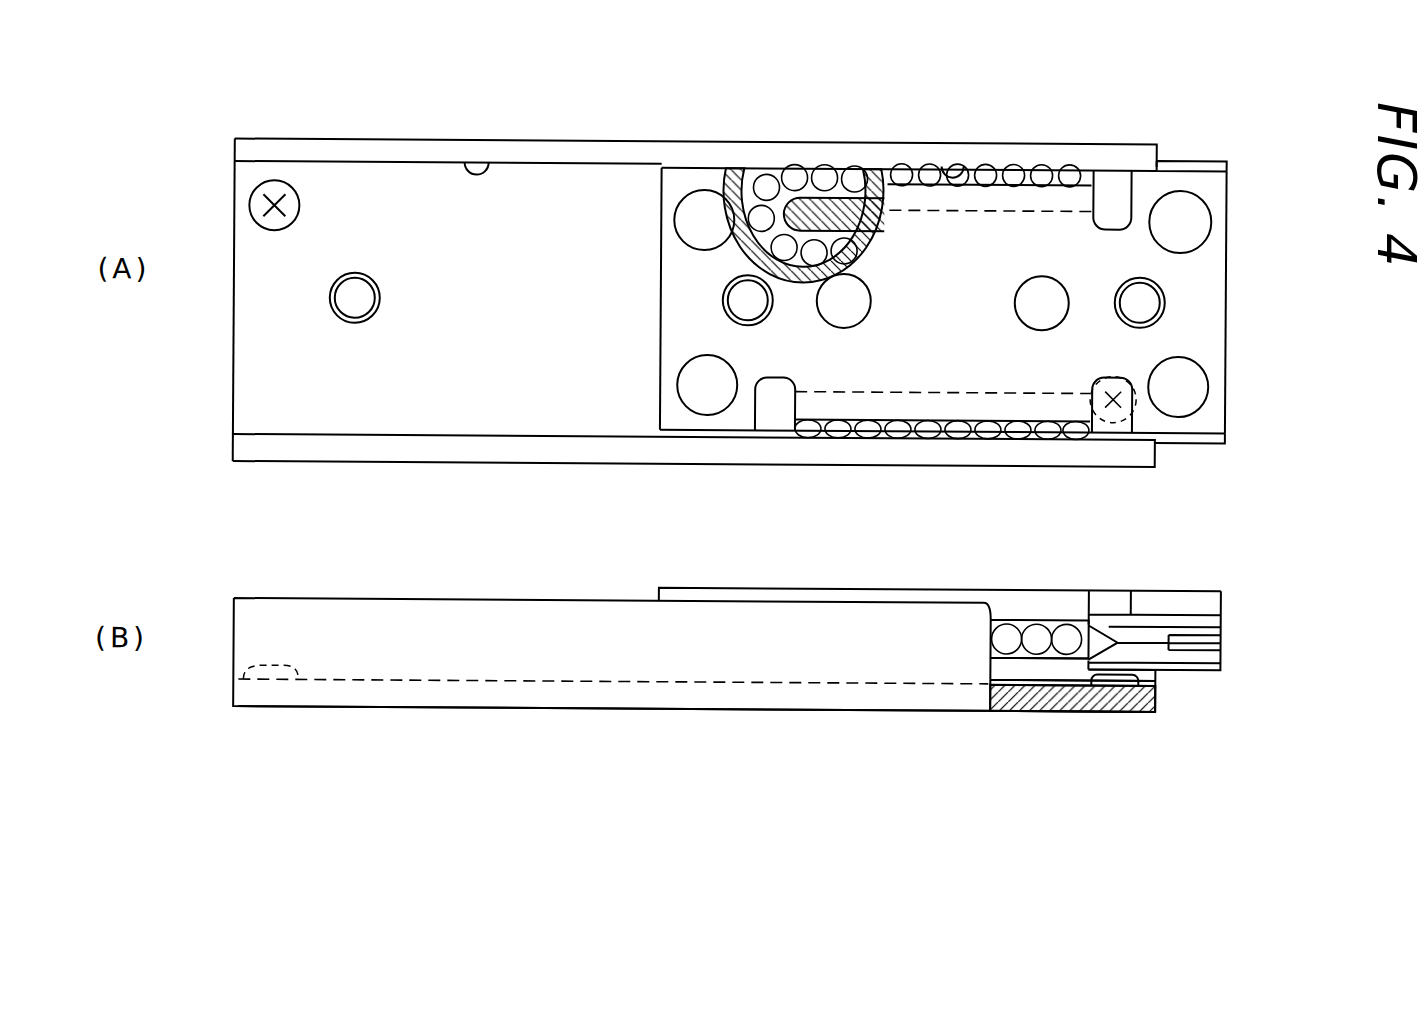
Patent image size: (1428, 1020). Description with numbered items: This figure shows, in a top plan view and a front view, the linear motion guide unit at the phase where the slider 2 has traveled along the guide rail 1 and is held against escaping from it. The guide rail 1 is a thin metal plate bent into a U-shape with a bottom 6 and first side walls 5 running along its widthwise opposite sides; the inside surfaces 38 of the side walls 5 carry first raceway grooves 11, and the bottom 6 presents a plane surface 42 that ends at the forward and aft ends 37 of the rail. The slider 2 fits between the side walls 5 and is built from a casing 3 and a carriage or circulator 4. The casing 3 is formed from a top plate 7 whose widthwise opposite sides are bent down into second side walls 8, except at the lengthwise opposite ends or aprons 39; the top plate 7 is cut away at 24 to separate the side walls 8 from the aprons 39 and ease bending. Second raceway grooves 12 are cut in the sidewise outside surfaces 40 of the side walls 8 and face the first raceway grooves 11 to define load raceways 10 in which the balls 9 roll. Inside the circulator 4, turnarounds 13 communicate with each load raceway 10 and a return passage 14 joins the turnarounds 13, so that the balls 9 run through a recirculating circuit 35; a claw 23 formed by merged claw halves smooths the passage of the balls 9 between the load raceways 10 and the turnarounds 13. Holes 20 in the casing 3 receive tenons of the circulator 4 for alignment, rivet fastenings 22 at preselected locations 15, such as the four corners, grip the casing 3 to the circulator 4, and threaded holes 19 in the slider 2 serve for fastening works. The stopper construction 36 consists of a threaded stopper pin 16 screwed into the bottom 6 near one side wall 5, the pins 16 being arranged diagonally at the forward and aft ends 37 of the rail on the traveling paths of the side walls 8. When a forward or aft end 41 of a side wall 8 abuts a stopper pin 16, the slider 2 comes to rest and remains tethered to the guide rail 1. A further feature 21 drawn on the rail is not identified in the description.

The guide rail 1 is at (226, 208).
The slider 2 is at (918, 238).
The casing 3 is at (1003, 243).
The carriage (circulator) 4 is at (1205, 668).
The first side walls 5 is at (1040, 152).
The bottom 6 is at (273, 325).
The top plate 7 is at (958, 348).
The second side walls 8 is at (978, 195).
The rolling elements (balls) 9 is at (825, 175).
The load raceways 10 is at (840, 176).
The first raceway grooves 11 is at (945, 164).
The second raceway grooves 12 is at (893, 172).
The turnarounds 13 is at (736, 205).
The return passage 14 is at (833, 232).
The preselected locations 15 is at (680, 375).
The stopper pin 16 is at (275, 185).
The threaded holes 19 is at (1155, 303).
The holes 20 is at (846, 312).
The rail mounting hole 21 is at (358, 310).
The rivet fastenings 22 is at (710, 390).
The claw 23 is at (1150, 640).
The cut-away 24 is at (1117, 195).
The recirculating circuit 35 is at (772, 167).
The stopper construction 36 is at (290, 188).
The forward and aft ends 37 is at (253, 262).
The inside surfaces 38 is at (463, 164).
The lengthwise opposite ends (aprons) 39 is at (676, 270).
The sidewise outside surfaces 40 is at (1005, 432).
The forward and aft ends 41 is at (1122, 405).
The plane surface 42 is at (525, 215).